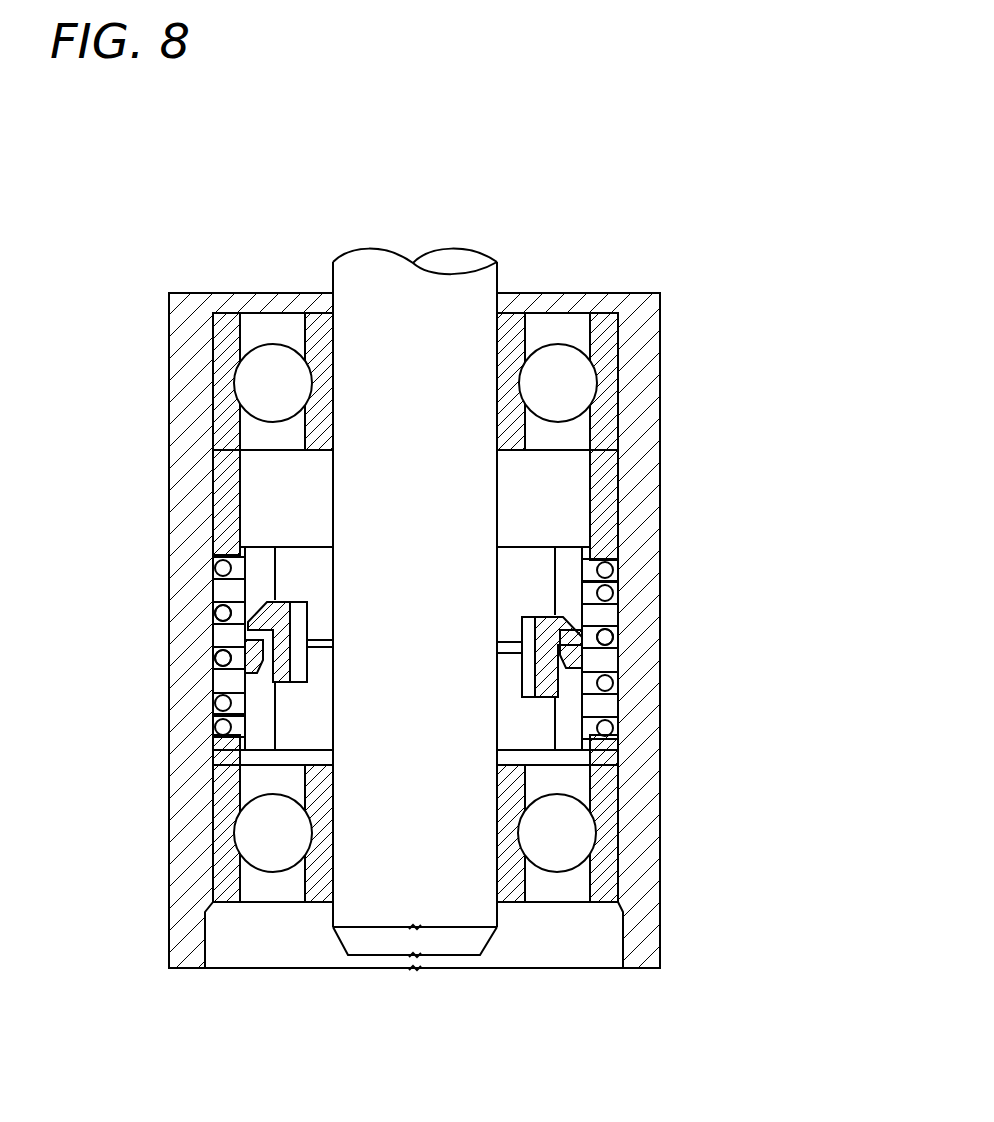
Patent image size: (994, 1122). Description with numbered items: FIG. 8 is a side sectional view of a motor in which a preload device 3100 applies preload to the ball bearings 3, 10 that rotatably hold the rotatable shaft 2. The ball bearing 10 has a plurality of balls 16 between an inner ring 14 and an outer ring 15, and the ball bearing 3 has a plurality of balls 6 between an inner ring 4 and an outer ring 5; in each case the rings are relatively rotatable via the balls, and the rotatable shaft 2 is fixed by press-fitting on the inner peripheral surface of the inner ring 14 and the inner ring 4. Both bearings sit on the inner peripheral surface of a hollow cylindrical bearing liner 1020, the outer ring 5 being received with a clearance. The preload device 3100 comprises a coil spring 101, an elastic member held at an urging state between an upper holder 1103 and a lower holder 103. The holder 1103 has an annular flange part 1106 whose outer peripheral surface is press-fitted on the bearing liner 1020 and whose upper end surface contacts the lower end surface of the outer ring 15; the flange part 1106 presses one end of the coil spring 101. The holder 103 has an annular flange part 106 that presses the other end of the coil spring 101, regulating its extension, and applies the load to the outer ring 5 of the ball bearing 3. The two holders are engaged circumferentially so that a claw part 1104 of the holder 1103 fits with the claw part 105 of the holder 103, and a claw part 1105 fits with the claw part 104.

The bearing liner 1020 is at (185, 373).
The annular flange part 106 is at (195, 790).
The rotatable shaft 2 is at (393, 867).
The balls 16 is at (267, 330).
The outer ring 15 is at (225, 440).
The inner ring 14 is at (312, 340).
The ball bearing 10 is at (283, 377).
The ball bearing 3 is at (257, 883).
The outer ring 5 is at (225, 835).
The inner ring 4 is at (317, 873).
The balls 6 is at (275, 840).
The annular flange part 1106 is at (275, 513).
The holder 1103 is at (518, 580).
The holder 103 is at (520, 727).
The claw part 1105 is at (583, 698).
The coil spring 101 is at (218, 708).
The claw part 105 is at (215, 612).
The claw part 1104 is at (218, 664).
The claw part 104 is at (612, 640).
The preload device 3100 is at (634, 663).